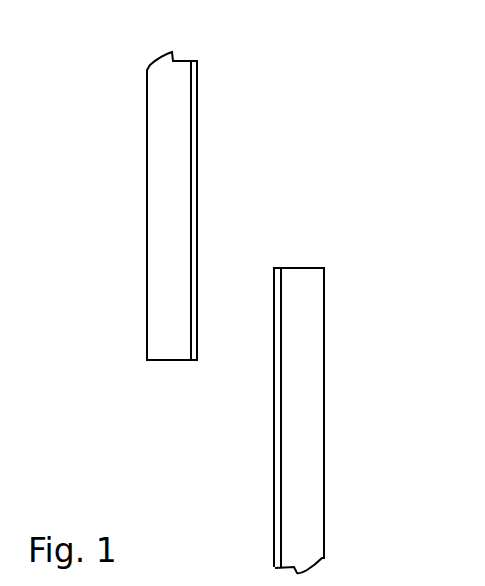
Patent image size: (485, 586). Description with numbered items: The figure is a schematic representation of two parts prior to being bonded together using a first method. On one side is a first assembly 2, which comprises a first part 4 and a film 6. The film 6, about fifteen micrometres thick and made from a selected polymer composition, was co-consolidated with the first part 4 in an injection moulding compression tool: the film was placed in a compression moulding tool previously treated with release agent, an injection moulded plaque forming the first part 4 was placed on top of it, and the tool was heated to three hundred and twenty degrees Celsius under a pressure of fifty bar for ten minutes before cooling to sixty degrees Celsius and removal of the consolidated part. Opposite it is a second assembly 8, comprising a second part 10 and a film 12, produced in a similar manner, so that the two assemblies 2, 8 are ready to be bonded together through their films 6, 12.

The first assembly 2 is at (108, 82).
The first part 4 is at (165, 230).
The film 6 is at (191, 173).
The second assembly 8 is at (399, 287).
The second part 10 is at (308, 411).
The film 12 is at (281, 485).